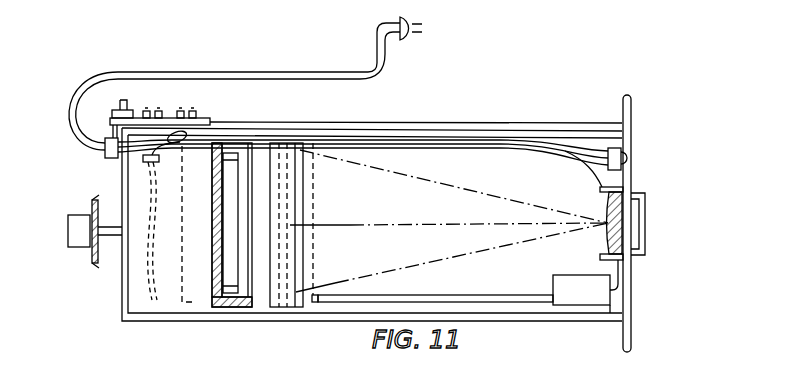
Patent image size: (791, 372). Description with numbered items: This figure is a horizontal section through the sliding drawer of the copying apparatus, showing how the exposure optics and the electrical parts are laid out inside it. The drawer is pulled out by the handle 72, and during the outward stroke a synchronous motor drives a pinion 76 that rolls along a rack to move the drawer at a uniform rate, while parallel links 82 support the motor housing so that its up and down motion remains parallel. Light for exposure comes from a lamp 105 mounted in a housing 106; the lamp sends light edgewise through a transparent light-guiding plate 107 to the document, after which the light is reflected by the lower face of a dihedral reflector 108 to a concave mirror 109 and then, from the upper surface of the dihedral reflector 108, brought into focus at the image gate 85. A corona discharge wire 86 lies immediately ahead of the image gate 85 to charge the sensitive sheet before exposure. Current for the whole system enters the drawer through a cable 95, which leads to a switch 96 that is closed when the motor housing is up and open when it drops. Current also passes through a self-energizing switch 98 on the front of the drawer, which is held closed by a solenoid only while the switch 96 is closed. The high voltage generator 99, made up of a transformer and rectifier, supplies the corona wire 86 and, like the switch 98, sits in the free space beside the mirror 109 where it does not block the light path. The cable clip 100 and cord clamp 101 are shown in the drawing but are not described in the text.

The handle 72 is at (645, 240).
The pinion 76 is at (123, 100).
The parallel links 82 is at (188, 110).
The image gate 85 is at (326, 121).
The corona discharge wire 86 is at (315, 187).
The cable 95 is at (361, 72).
The switch 96 is at (107, 160).
The self-energizing switch 98 is at (633, 159).
The high voltage generator 99 is at (594, 300).
The cable clip 100 is at (197, 128).
The cord clamp 101 is at (145, 163).
The lamp 105 is at (238, 248).
The lamp housing 106 is at (217, 298).
The transparent light-guiding plate 107 is at (262, 294).
The dihedral reflector 108 is at (312, 288).
The concave mirror 109 is at (618, 212).